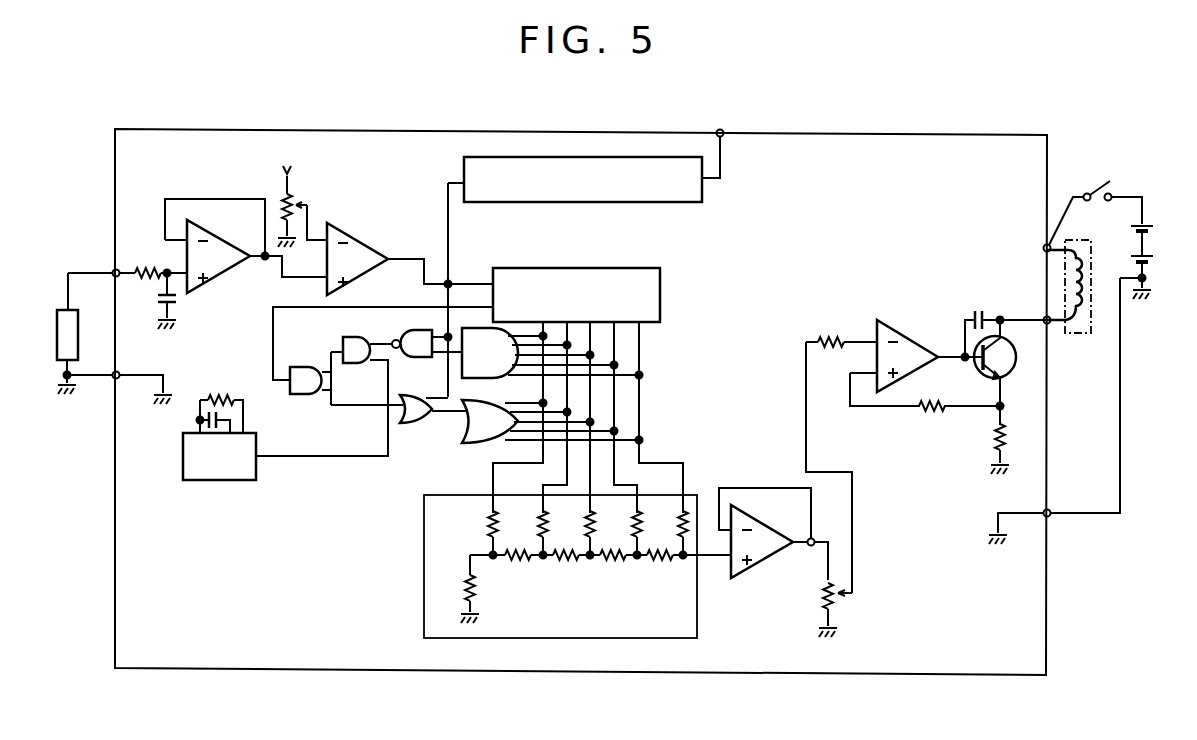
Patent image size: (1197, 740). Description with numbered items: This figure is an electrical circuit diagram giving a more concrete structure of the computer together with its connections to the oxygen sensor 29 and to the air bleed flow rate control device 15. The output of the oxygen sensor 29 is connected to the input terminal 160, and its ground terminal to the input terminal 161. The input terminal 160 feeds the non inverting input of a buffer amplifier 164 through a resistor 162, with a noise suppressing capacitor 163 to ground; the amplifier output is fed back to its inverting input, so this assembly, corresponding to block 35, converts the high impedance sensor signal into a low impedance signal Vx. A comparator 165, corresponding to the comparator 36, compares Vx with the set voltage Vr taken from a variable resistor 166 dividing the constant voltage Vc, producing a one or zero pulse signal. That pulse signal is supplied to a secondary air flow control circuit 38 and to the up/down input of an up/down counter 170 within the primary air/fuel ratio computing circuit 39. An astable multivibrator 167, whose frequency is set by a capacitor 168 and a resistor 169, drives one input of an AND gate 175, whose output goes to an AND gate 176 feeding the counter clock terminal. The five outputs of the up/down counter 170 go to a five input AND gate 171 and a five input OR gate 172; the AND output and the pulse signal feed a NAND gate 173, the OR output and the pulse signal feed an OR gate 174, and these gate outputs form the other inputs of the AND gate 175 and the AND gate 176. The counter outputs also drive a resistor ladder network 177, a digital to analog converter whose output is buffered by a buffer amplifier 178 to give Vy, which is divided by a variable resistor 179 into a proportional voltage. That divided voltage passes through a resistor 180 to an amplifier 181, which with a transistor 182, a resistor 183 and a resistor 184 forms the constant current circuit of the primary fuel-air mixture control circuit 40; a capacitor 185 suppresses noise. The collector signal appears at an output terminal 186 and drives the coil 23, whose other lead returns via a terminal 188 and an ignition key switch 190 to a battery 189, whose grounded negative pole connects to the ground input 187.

The air bleed flow rate control device 15 is at (1091, 265).
The coil 23 is at (1084, 322).
The oxygen sensor 29 is at (57, 326).
The block 35 is at (213, 191).
The comparator 36 is at (360, 221).
The secondary air flow control circuit 38 is at (583, 192).
The primary air/fuel ratio computing circuit 39 is at (683, 303).
The primary fuel-air mixture control circuit 40 is at (1018, 425).
The input terminal 160 is at (112, 270).
The input terminal 161 is at (113, 378).
The resistor 162 is at (146, 267).
The capacitor 163 is at (178, 300).
The buffer amplifier 164 is at (230, 248).
The comparator 165 is at (356, 250).
The variable resistor 166 is at (292, 194).
The astable multivibrator 167 is at (220, 480).
The capacitor 168 is at (203, 418).
The resistor 169 is at (222, 394).
The up/down counter 170 is at (650, 268).
The five input AND gate 171 is at (470, 378).
The five input OR gate 172 is at (470, 443).
The NAND gate 173 is at (405, 332).
The OR gate 174 is at (415, 423).
The AND gate 175 is at (343, 340).
The AND gate 176 is at (300, 394).
The R/2R ladder network 177 is at (424, 560).
The buffer amplifier 178 is at (762, 560).
The variable resistor 179 is at (836, 600).
The resistor 180 is at (832, 336).
The amplifier 181 is at (926, 340).
The transistor 182 is at (970, 380).
The resistor 183 is at (930, 418).
The resistor 184 is at (992, 440).
The capacitor 185 is at (978, 308).
The output terminal 186 is at (1044, 318).
The ground input 187 is at (1048, 510).
The terminal 188 is at (1050, 246).
The battery 189 is at (1150, 242).
The ignition key switch 190 is at (1112, 195).